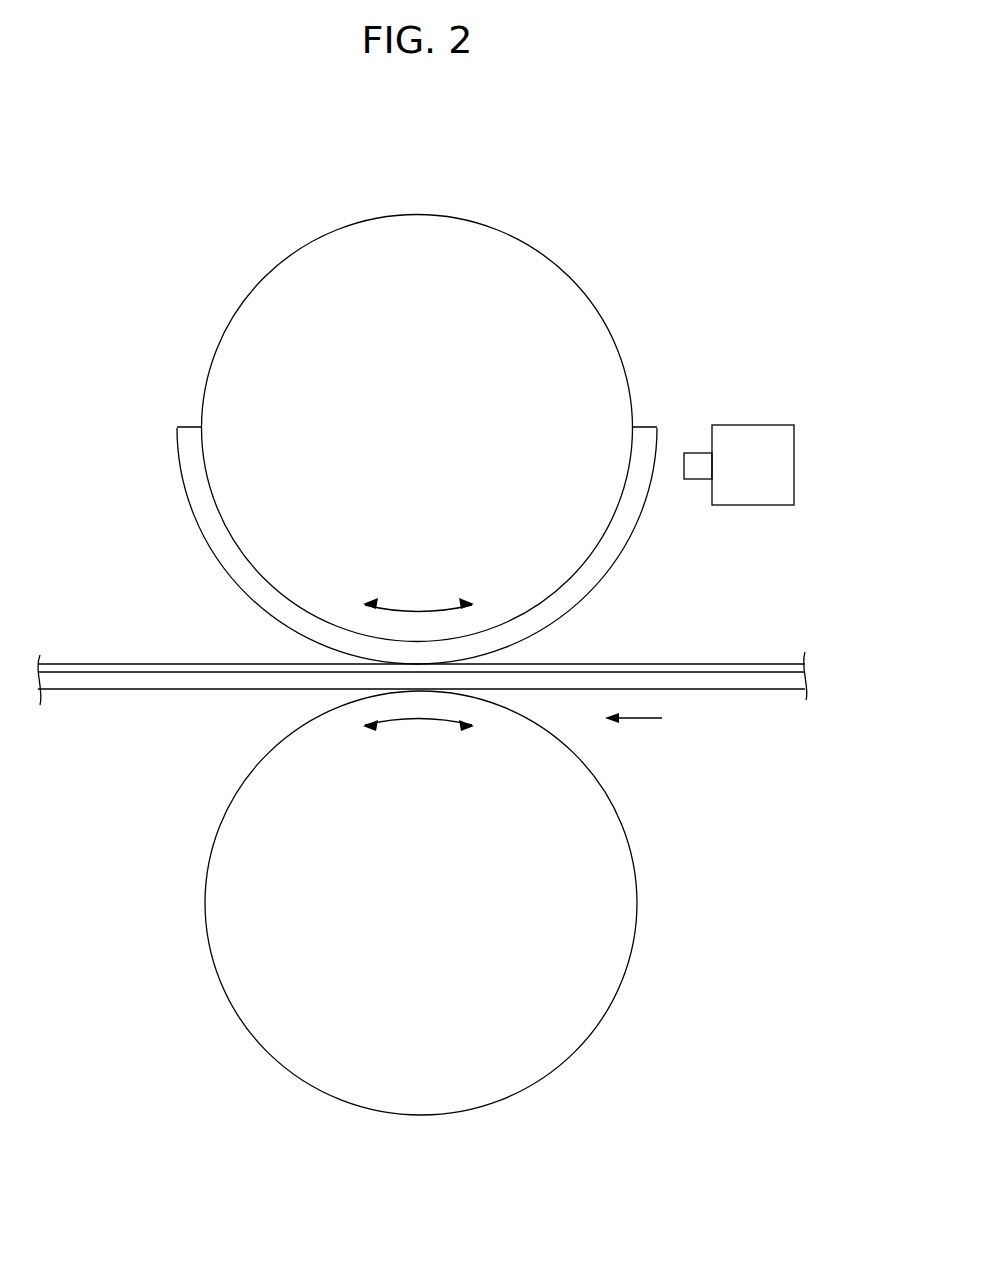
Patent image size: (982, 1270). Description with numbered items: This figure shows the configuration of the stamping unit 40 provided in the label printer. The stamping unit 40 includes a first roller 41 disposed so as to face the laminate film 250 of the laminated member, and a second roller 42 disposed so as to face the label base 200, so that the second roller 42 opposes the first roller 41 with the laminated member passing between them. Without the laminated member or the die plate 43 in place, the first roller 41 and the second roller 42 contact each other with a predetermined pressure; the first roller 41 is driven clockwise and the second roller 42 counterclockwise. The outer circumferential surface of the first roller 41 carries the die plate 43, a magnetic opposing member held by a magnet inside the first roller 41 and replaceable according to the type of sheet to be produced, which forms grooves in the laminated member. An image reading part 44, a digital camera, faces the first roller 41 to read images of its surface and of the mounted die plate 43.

The stamping unit 40 is at (158, 160).
The first roller 41 is at (320, 237).
The second roller 42 is at (207, 882).
The die plate 43 is at (178, 468).
The image reading part 44 is at (750, 425).
The laminate film 250 is at (757, 663).
The label base 200 is at (758, 690).